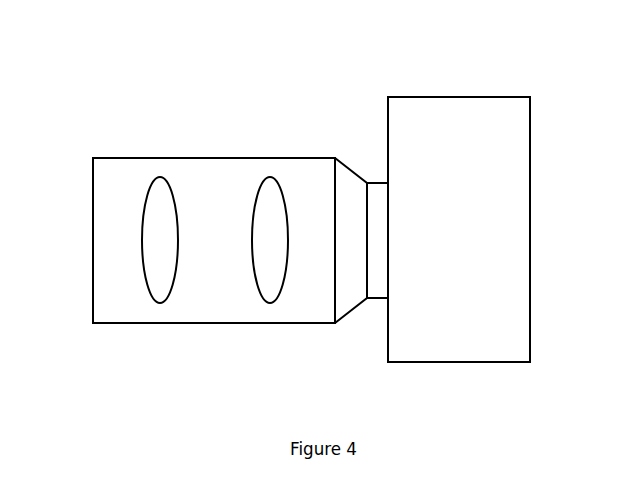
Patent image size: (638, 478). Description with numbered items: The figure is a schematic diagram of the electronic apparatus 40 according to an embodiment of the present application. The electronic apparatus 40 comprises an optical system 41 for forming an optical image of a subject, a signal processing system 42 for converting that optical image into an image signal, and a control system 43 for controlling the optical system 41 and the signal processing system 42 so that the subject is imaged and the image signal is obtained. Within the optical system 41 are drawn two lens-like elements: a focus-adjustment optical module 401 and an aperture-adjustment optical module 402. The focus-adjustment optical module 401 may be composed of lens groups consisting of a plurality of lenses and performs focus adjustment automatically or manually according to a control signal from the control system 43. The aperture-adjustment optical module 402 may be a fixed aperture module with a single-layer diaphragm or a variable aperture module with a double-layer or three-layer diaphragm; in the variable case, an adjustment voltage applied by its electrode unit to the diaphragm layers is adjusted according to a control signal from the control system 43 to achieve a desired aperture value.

The electronic apparatus 40 is at (178, 75).
The optical system 41 is at (222, 117).
The signal processing system 42 is at (382, 180).
The control system 43 is at (460, 97).
The focus-adjustment optical module 401 is at (158, 303).
The aperture-adjustment optical module 402 is at (269, 303).